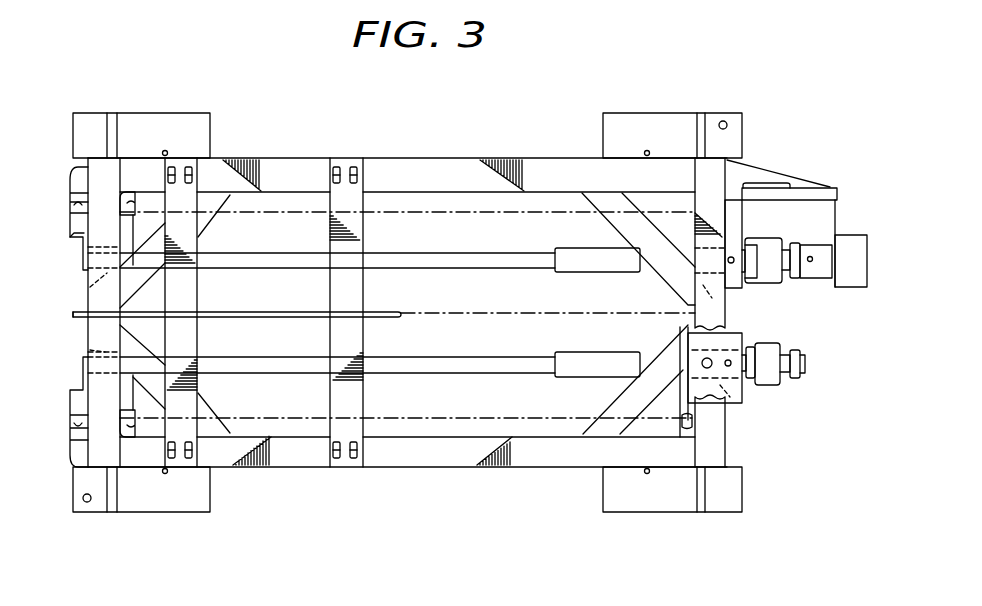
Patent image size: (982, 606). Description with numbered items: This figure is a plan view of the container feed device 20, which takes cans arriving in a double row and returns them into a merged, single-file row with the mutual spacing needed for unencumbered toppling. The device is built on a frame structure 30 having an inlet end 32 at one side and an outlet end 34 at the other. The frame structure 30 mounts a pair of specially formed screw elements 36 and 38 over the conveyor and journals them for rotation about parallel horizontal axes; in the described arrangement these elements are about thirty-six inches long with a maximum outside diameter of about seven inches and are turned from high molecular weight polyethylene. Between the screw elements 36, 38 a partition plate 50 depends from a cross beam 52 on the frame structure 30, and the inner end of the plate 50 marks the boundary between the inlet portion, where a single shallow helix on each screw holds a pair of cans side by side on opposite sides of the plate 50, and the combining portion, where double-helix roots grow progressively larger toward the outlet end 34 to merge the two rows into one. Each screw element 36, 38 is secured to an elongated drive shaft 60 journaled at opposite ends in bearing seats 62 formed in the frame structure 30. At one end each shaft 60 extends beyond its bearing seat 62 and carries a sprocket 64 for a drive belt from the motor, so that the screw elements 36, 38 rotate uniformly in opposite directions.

The container feed device 20 is at (492, 110).
The frame structure 30 is at (283, 158).
The inlet end 32 is at (60, 329).
The outlet end 34 is at (815, 306).
The screw element 36 is at (420, 412).
The screw element 38 is at (412, 220).
The partition plate 50 is at (232, 312).
The cross beam 52 is at (198, 240).
The drive shaft 60 is at (500, 262).
The bearing seat 62 is at (84, 290).
The sprocket 64 is at (789, 384).